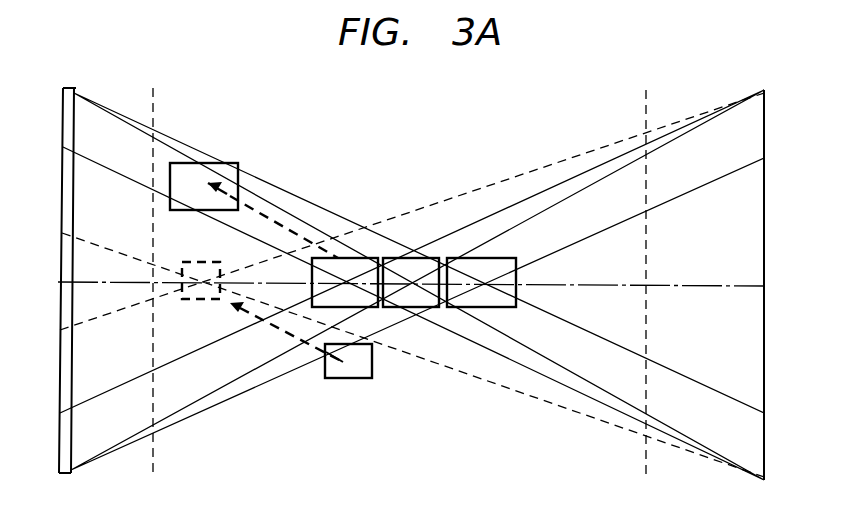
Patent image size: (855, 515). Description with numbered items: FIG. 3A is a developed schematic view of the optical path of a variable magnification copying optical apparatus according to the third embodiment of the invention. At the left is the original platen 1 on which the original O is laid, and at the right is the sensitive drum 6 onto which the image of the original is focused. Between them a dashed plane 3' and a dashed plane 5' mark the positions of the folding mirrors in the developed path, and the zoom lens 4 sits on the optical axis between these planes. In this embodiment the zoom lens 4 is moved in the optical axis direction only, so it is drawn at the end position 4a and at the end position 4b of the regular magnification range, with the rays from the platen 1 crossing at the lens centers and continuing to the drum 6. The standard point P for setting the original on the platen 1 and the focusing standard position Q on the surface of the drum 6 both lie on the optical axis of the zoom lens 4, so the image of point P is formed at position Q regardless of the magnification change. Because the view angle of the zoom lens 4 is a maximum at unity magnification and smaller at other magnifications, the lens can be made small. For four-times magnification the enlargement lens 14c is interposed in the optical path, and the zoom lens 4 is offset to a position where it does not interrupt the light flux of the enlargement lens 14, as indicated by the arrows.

The platen 1 is at (70, 93).
The mirror position plane 3' is at (176, 269).
The zoom lens 4 is at (407, 257).
The zoom lens position 4a is at (346, 257).
The zoom lens position 4b is at (487, 257).
The mirror position plane 5' is at (674, 270).
The sensitive drum 6 is at (764, 242).
The enlargement lens 14 is at (348, 380).
The enlargement lens 14c is at (199, 260).
The original O is at (62, 221).
The standard point P is at (60, 283).
The focusing standard position Q is at (764, 287).